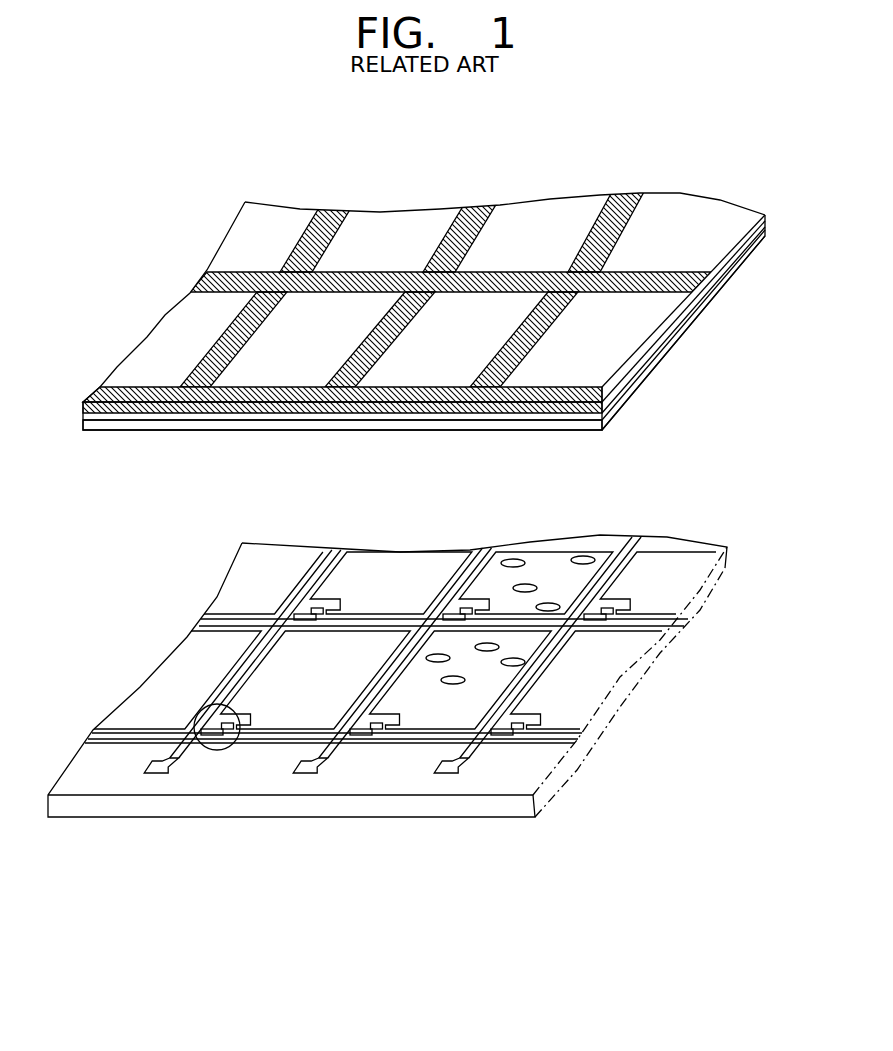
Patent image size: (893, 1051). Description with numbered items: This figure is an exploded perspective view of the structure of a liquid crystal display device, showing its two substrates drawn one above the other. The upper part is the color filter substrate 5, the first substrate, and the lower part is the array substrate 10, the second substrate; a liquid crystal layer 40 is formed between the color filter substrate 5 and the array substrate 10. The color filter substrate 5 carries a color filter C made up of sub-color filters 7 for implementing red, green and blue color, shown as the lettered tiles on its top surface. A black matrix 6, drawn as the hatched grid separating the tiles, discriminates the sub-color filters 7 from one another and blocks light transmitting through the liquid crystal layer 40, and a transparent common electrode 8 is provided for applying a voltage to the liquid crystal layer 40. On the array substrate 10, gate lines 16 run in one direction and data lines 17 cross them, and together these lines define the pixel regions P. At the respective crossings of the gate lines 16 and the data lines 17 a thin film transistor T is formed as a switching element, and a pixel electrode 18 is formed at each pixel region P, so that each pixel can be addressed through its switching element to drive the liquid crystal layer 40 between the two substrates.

The color filter C is at (158, 298).
The color filter substrate 5 is at (580, 418).
The black matrix 6 is at (603, 394).
The sub-color filters 7 is at (645, 323).
The transparent common electrode 8 is at (565, 426).
The array substrate 10 is at (383, 808).
The gate lines 16 is at (432, 742).
The data lines 17 is at (338, 760).
The pixel electrode 18 is at (505, 700).
The liquid crystal layer 40 is at (537, 588).
The pixel regions P is at (580, 683).
The thin film transistor T is at (218, 762).